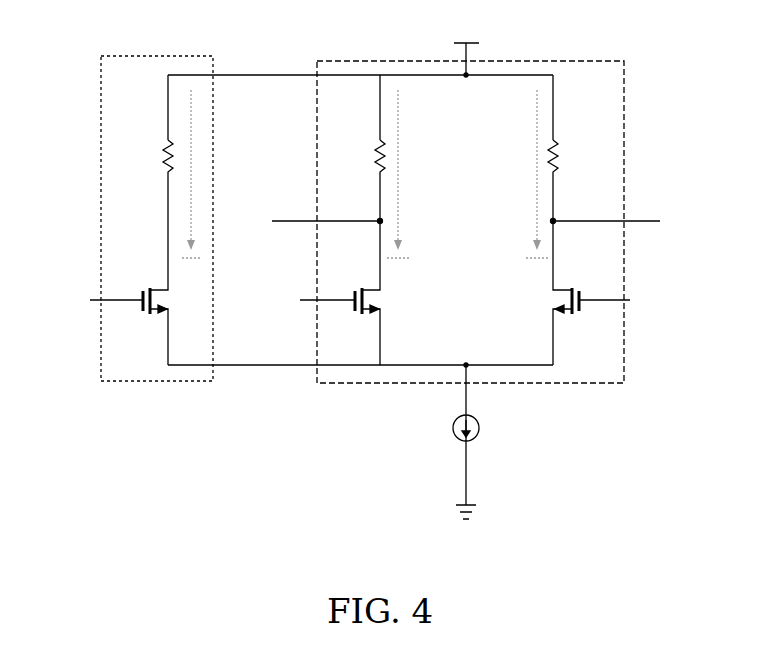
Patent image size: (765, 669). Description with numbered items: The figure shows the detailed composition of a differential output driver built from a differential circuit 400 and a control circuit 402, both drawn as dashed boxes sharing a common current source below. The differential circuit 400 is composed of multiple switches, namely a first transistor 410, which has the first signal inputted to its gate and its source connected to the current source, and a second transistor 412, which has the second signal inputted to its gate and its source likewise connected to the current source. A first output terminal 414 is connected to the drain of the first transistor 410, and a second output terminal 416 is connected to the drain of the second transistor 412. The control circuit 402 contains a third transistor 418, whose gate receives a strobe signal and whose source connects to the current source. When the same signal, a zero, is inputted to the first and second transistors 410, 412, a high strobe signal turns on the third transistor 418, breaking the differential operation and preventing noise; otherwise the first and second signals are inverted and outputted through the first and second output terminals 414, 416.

The differential circuit 400 is at (449, 281).
The control circuit 402 is at (118, 218).
The first transistor 410 is at (366, 314).
The second transistor 412 is at (570, 314).
The first output terminal 414 is at (380, 208).
The second output terminal 416 is at (553, 221).
The third transistor 418 is at (156, 314).